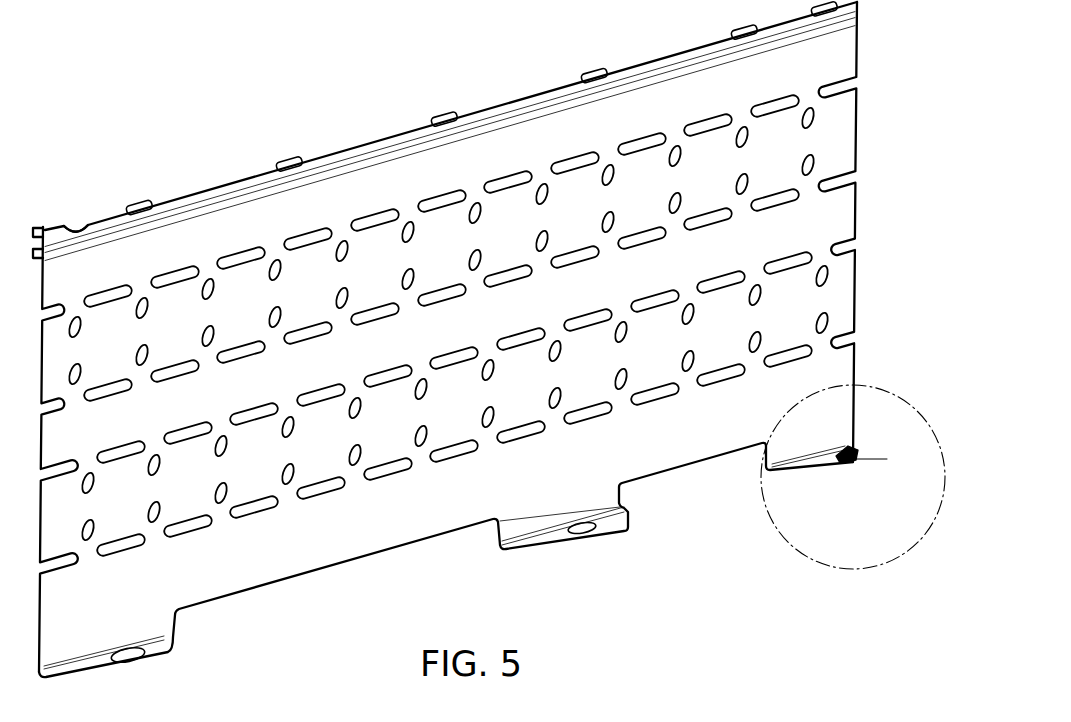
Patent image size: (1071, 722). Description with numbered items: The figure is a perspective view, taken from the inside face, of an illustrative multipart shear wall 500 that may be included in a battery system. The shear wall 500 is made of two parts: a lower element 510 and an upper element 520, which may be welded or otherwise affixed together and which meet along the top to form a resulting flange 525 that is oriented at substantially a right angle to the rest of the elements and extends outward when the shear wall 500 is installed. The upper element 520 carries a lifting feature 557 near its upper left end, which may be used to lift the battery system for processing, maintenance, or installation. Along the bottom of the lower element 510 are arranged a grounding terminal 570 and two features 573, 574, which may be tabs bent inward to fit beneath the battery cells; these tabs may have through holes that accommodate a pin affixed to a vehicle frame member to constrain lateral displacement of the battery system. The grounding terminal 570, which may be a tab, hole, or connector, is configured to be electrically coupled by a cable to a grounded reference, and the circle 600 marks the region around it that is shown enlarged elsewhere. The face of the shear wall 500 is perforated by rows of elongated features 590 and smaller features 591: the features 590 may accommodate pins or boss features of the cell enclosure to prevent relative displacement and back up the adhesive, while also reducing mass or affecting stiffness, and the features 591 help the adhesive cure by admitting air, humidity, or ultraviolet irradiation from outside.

The multipart shear wall 500 is at (324, 105).
The lower element 510 is at (898, 344).
The upper element 520 is at (887, 459).
The flange 525 is at (447, 112).
The lifting feature 557 is at (64, 226).
The grounding terminal 570 is at (850, 470).
The feature (tab) 573 is at (570, 553).
The feature (tab) 574 is at (170, 660).
The features (slots) 590 is at (383, 482).
The features (holes) 591 is at (284, 476).
The circle 600 is at (803, 557).